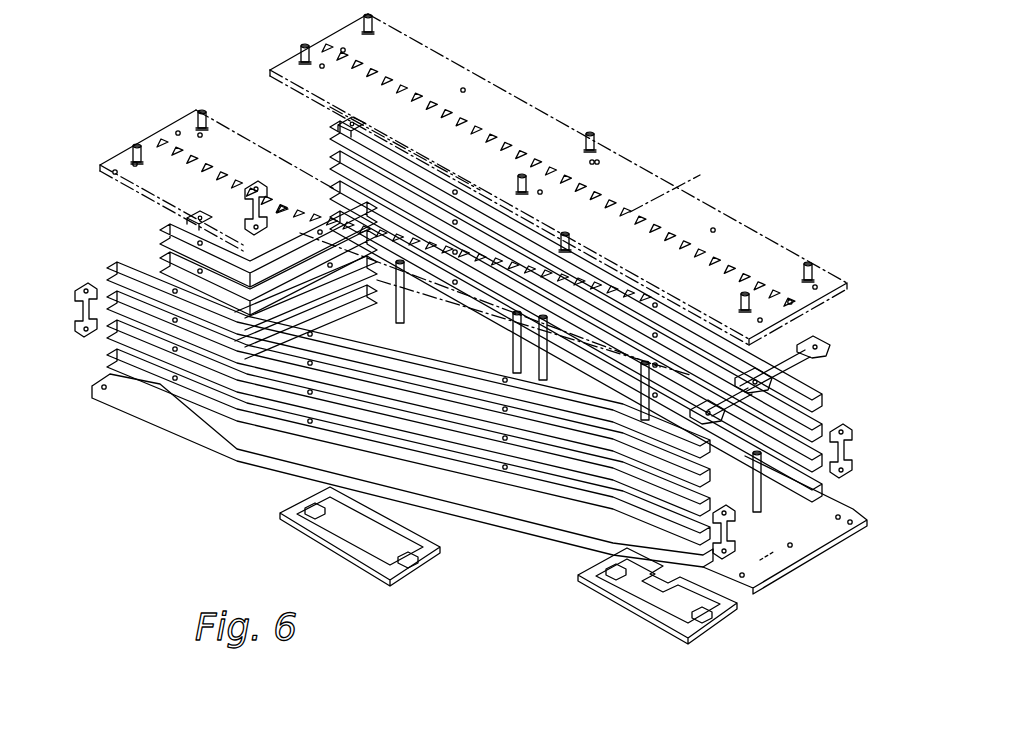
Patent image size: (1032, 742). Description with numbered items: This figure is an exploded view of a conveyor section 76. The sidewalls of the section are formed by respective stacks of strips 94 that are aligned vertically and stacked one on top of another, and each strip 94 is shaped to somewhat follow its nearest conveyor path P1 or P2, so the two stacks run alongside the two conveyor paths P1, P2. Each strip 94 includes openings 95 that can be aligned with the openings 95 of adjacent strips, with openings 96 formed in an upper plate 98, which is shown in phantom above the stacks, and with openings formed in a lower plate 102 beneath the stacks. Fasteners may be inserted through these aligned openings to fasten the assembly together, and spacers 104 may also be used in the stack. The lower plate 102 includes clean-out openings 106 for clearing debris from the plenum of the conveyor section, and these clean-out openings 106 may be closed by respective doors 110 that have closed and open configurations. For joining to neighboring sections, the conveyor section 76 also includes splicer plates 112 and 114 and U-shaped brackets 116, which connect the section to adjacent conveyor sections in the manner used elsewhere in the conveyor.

The conveyor section 76 is at (787, 223).
The conveyor path P1 is at (484, 128).
The conveyor path P2 is at (187, 153).
The openings 96 is at (587, 160).
The upper plate 98 is at (647, 197).
The U-shaped brackets 116 is at (248, 187).
The splicer plate 112 is at (807, 343).
The openings 95 is at (800, 387).
The strips 94 is at (813, 420).
The spacers 104 is at (800, 540).
The splicer plate 114 is at (800, 557).
The clean-out openings 106 is at (767, 495).
The lower plate 102 is at (733, 537).
The doors 110 is at (670, 633).